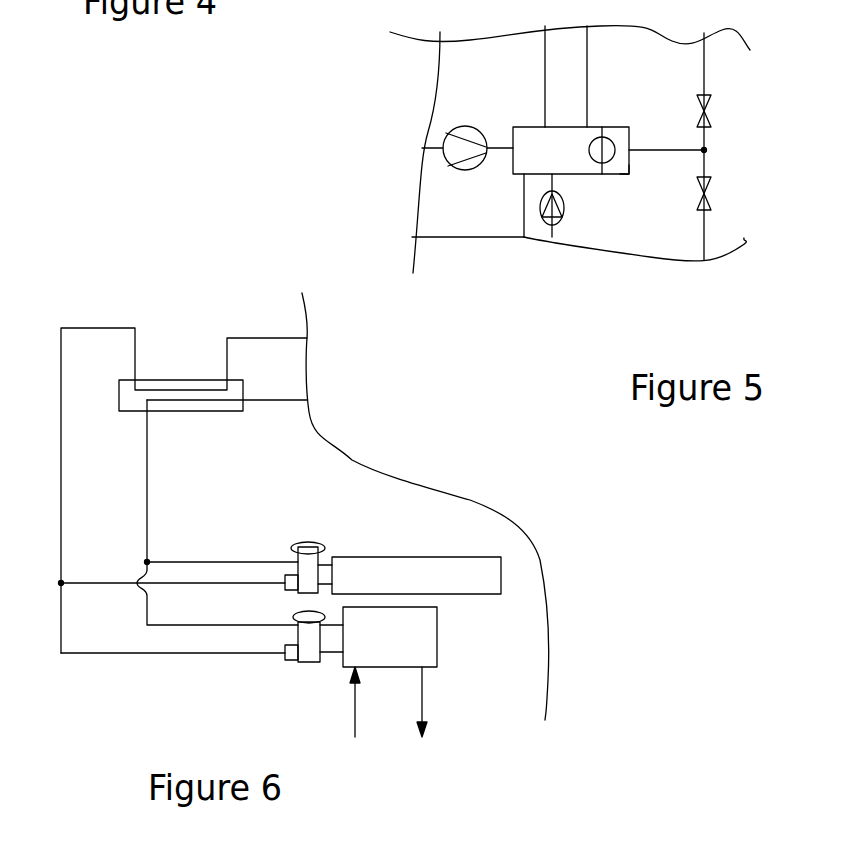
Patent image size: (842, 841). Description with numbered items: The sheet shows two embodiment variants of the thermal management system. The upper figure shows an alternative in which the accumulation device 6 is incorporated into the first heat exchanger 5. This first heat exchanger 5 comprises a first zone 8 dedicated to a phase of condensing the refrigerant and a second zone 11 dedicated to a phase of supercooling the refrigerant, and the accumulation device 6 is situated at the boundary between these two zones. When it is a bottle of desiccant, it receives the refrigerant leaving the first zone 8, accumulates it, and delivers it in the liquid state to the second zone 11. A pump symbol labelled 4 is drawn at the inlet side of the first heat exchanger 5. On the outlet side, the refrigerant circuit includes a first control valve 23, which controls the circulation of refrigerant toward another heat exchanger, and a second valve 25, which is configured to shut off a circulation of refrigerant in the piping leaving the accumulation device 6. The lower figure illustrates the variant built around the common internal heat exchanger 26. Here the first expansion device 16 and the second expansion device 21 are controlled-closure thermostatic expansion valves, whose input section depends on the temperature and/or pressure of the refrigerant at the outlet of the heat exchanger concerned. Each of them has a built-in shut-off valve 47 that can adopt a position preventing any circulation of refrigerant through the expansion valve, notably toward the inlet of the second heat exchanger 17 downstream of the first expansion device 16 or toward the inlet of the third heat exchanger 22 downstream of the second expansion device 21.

In FIG. 5, the pump 4 is at (467, 178).
In FIG. 5, the first heat exchanger 5 is at (514, 113).
In FIG. 5, the accumulation device 6 is at (606, 137).
In FIG. 5, the first zone 8 is at (560, 162).
In FIG. 5, the second zone 11 is at (620, 163).
In FIG. 5, the first control valve 23 is at (708, 105).
In FIG. 5, the second valve 25 is at (709, 200).
In FIG. 6, the common internal heat exchanger 26 is at (186, 378).
In FIG. 6, the first expansion device 16 is at (306, 565).
In FIG. 6, the second heat exchanger 17 is at (421, 575).
In FIG. 6, the shut-off valve 47 is at (285, 585).
In FIG. 6, the second expansion device 21 is at (309, 650).
In FIG. 6, the third heat exchanger 22 is at (430, 638).